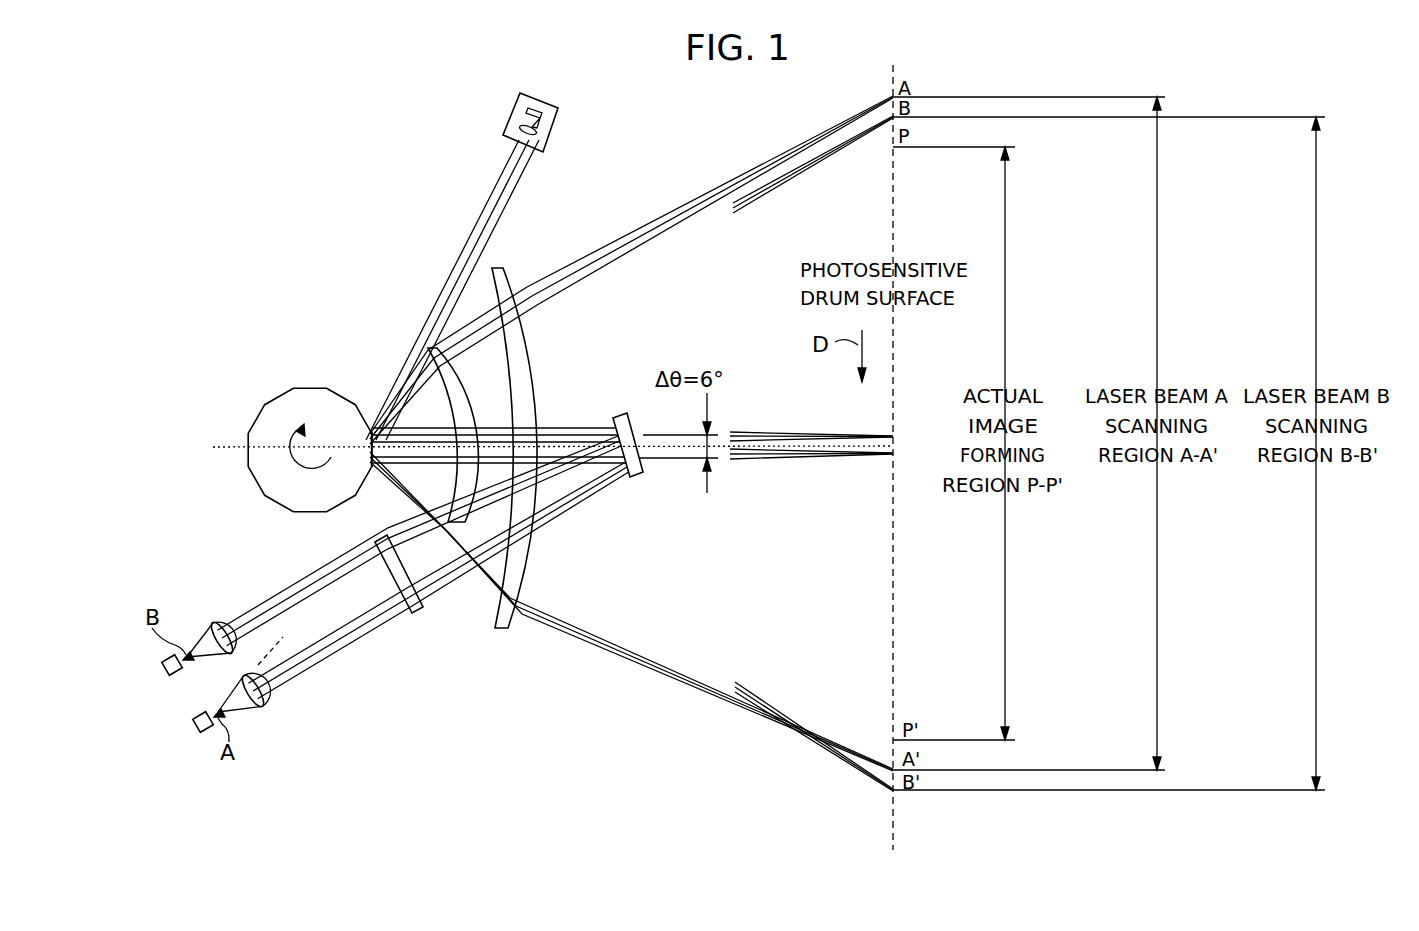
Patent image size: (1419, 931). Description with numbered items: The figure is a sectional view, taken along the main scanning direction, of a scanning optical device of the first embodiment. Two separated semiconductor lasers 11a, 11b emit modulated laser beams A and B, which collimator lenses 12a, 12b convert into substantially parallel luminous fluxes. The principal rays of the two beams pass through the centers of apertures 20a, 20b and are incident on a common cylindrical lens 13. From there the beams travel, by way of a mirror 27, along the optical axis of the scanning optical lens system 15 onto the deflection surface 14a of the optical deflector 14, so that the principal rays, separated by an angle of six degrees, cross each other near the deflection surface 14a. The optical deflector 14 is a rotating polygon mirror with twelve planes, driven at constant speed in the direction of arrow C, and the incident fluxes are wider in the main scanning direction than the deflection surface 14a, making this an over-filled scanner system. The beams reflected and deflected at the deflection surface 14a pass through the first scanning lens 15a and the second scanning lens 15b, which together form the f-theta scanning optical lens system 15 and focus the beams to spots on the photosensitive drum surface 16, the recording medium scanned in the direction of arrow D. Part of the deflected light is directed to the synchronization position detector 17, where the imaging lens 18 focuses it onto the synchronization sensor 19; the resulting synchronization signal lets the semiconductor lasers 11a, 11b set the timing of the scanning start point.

The semiconductor laser 11a is at (197, 722).
The semiconductor laser 11b is at (164, 665).
The collimator lens 12a is at (262, 706).
The collimator lens 12b is at (212, 625).
The cylindrical lens 13 is at (415, 614).
The optical deflector 14 is at (282, 393).
The deflection surface 14a is at (368, 432).
The scanning optical lens system 15 is at (488, 418).
The first scanning lens 15a is at (470, 400).
The second scanning lens 15b is at (533, 350).
The photosensitive drum surface 16 is at (895, 228).
The synchronization position detector 17 is at (480, 245).
The imaging lens 18 is at (519, 126).
The synchronization sensor 19 is at (537, 108).
The aperture 20a is at (295, 690).
The aperture 20b is at (247, 605).
The mirror 27 is at (636, 478).